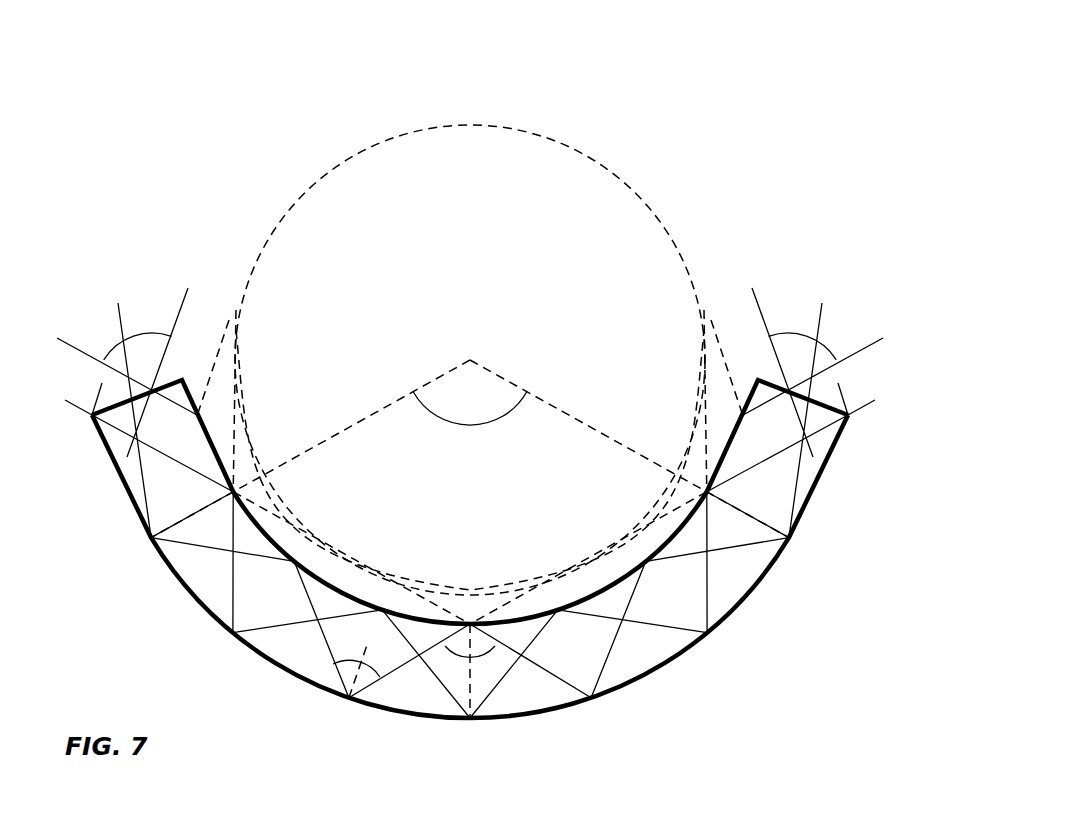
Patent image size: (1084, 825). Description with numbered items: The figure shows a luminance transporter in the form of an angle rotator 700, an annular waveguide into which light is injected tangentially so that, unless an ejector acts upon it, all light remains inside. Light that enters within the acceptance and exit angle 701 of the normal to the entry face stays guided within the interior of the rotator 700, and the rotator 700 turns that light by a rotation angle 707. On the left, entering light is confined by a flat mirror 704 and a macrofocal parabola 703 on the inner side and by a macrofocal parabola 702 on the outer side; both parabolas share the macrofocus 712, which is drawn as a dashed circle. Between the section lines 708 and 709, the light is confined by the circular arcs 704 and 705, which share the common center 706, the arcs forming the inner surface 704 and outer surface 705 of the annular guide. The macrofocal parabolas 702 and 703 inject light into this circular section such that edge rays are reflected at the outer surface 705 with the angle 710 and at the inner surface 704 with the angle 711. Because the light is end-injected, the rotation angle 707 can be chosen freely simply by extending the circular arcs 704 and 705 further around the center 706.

The angle rotator 700 is at (665, 120).
The acceptance and exit angle 701 is at (116, 342).
The macrofocal parabola 702 is at (458, 454).
The macrofocal parabola 703 is at (212, 434).
The flat mirror / inner circular arc 704 is at (426, 616).
The outer circular arc 705 is at (662, 674).
The center 706 is at (470, 435).
The rotation angle 707 is at (470, 423).
The section line 708 is at (323, 449).
The section line 709 is at (616, 445).
The reflection angle at outer surface 710 is at (314, 700).
The reflection angle at inner surface 711 is at (518, 694).
The macrofocus 712 is at (335, 153).